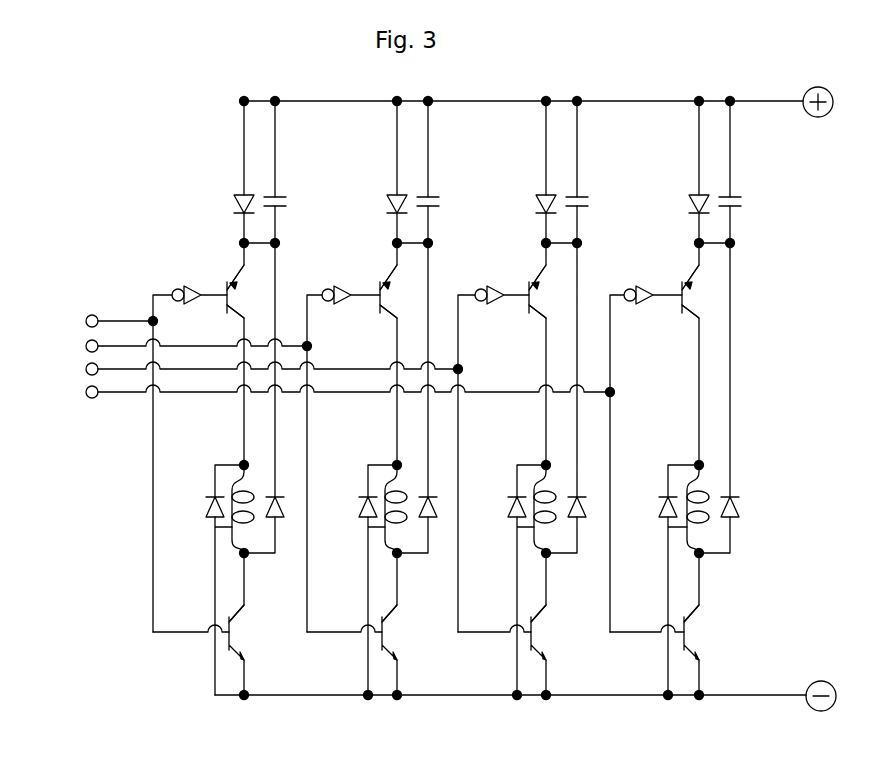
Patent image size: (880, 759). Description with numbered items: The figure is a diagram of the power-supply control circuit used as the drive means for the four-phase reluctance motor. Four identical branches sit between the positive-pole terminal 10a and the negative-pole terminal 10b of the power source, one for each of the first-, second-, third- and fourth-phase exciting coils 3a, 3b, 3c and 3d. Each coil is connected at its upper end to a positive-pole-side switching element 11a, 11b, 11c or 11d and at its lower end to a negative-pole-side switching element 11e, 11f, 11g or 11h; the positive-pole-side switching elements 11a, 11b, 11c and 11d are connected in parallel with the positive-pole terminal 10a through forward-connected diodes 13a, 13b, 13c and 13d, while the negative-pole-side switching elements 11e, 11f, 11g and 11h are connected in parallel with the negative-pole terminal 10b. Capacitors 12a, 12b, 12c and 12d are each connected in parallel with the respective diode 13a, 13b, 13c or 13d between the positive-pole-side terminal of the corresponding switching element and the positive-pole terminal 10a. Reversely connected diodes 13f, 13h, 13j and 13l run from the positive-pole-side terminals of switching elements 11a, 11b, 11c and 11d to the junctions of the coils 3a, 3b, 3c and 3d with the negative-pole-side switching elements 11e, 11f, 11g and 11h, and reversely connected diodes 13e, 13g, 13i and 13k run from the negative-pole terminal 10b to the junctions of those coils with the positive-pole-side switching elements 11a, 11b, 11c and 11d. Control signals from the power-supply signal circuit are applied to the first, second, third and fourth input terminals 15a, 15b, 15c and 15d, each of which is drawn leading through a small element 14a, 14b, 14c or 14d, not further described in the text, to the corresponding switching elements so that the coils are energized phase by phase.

The first positive-pole-side switching element 11a is at (238, 298).
The capacitor 12a is at (286, 205).
The forward-connected diode 13a is at (234, 205).
The inverter 14a is at (173, 290).
The first input terminal 15a is at (86, 318).
The second positive-pole-side switching element 11b is at (391, 298).
The capacitor 12b is at (439, 205).
The forward-connected diode 13b is at (387, 205).
The inverter 14b is at (323, 290).
The second input terminal 15b is at (86, 347).
The third positive-pole-side switching element 11c is at (540, 298).
The capacitor 12c is at (588, 205).
The forward-connected diode 13c is at (536, 205).
The inverter 14c is at (476, 290).
The third input terminal 15c is at (86, 369).
The fourth positive-pole-side switching element 11d is at (693, 298).
The capacitor 12d is at (741, 205).
The forward-connected diode 13d is at (689, 205).
The inverter 14d is at (625, 290).
The fourth input terminal 15d is at (86, 393).
The diode 13e is at (208, 496).
The diode 13f is at (283, 524).
The diode 13g is at (361, 496).
The diode 13h is at (436, 524).
The diode 13i is at (510, 496).
The diode 13j is at (585, 524).
The diode 13k is at (661, 496).
The diode 13l is at (738, 524).
The first negative-pole-side switching element 11e is at (237, 633).
The second negative-pole-side switching element 11f is at (390, 633).
The third negative-pole-side switching element 11g is at (539, 633).
The fourth negative-pole-side switching element 11h is at (692, 633).
The first-phase exciting coil 3a is at (215, 530).
The second-phase exciting coil 3b is at (368, 530).
The third-phase exciting coil 3c is at (517, 530).
The fourth-phase exciting coil 3d is at (668, 530).
The positive-pole terminal 10a is at (825, 117).
The negative-pole terminal 10b is at (822, 681).